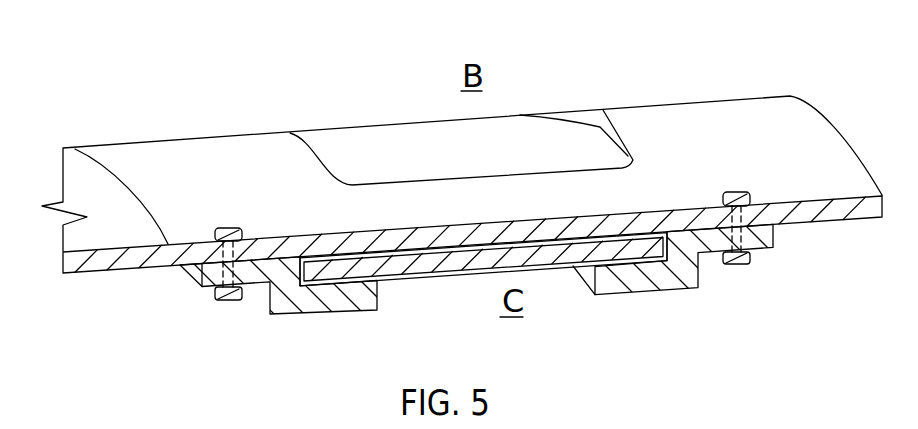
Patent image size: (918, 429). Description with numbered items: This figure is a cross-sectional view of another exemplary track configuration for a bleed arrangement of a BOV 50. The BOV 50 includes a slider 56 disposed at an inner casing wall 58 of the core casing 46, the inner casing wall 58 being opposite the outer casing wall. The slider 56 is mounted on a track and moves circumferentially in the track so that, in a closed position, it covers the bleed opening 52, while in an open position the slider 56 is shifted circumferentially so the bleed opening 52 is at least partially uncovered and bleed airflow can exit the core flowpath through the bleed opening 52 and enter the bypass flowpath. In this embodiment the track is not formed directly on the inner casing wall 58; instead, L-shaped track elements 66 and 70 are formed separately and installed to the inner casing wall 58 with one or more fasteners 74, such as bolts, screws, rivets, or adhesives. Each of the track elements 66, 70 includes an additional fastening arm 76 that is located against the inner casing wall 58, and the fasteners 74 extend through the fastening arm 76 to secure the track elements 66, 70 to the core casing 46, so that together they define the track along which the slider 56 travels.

The BOV 50 is at (224, 46).
The core casing 46 is at (778, 118).
The bleed opening 52 is at (603, 124).
The inner casing wall 58 is at (102, 262).
The slider 56 is at (425, 263).
The L-shaped track element 66 is at (338, 300).
The L-shaped track element 70 is at (640, 278).
The fastening arm 76 is at (213, 290).
The fastener 74 is at (230, 300).